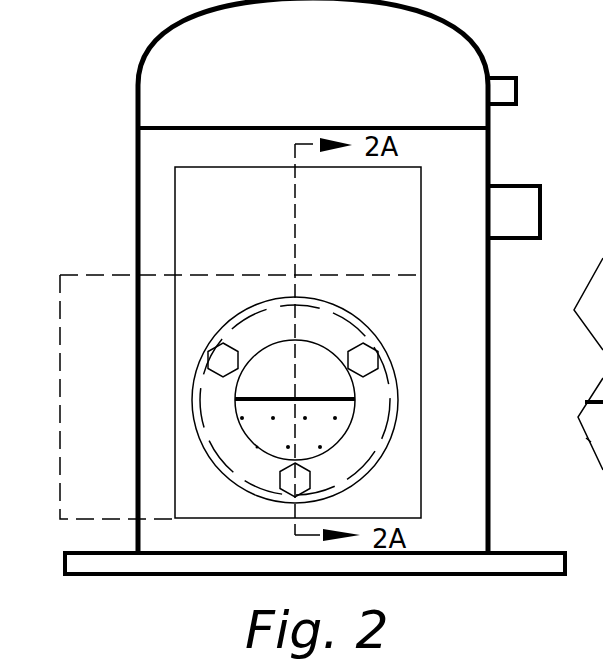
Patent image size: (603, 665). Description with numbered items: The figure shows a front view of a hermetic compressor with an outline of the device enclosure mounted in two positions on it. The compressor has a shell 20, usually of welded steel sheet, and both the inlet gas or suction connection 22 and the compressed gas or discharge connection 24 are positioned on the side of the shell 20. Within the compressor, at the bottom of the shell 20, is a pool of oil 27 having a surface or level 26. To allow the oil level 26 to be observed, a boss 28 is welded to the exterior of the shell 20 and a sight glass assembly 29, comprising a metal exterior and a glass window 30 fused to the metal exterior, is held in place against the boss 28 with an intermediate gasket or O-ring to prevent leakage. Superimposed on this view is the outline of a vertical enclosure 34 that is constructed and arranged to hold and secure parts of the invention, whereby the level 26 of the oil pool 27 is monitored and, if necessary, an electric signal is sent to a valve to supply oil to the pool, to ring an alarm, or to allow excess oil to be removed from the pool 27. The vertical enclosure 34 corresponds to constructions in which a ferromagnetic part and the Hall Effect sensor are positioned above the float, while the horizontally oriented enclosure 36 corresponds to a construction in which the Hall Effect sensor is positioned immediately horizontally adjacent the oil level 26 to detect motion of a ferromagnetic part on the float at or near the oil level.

The shell 20 is at (315, 287).
The suction connection 22 is at (541, 192).
The discharge connection 24 is at (518, 88).
The oil level 26 is at (262, 398).
The pool of oil 27 is at (602, 500).
The boss 28 is at (256, 316).
The sight glass assembly 29 is at (357, 481).
The glass window 30 is at (312, 368).
The vertical enclosure 34 is at (175, 212).
The enclosure 36 is at (78, 275).